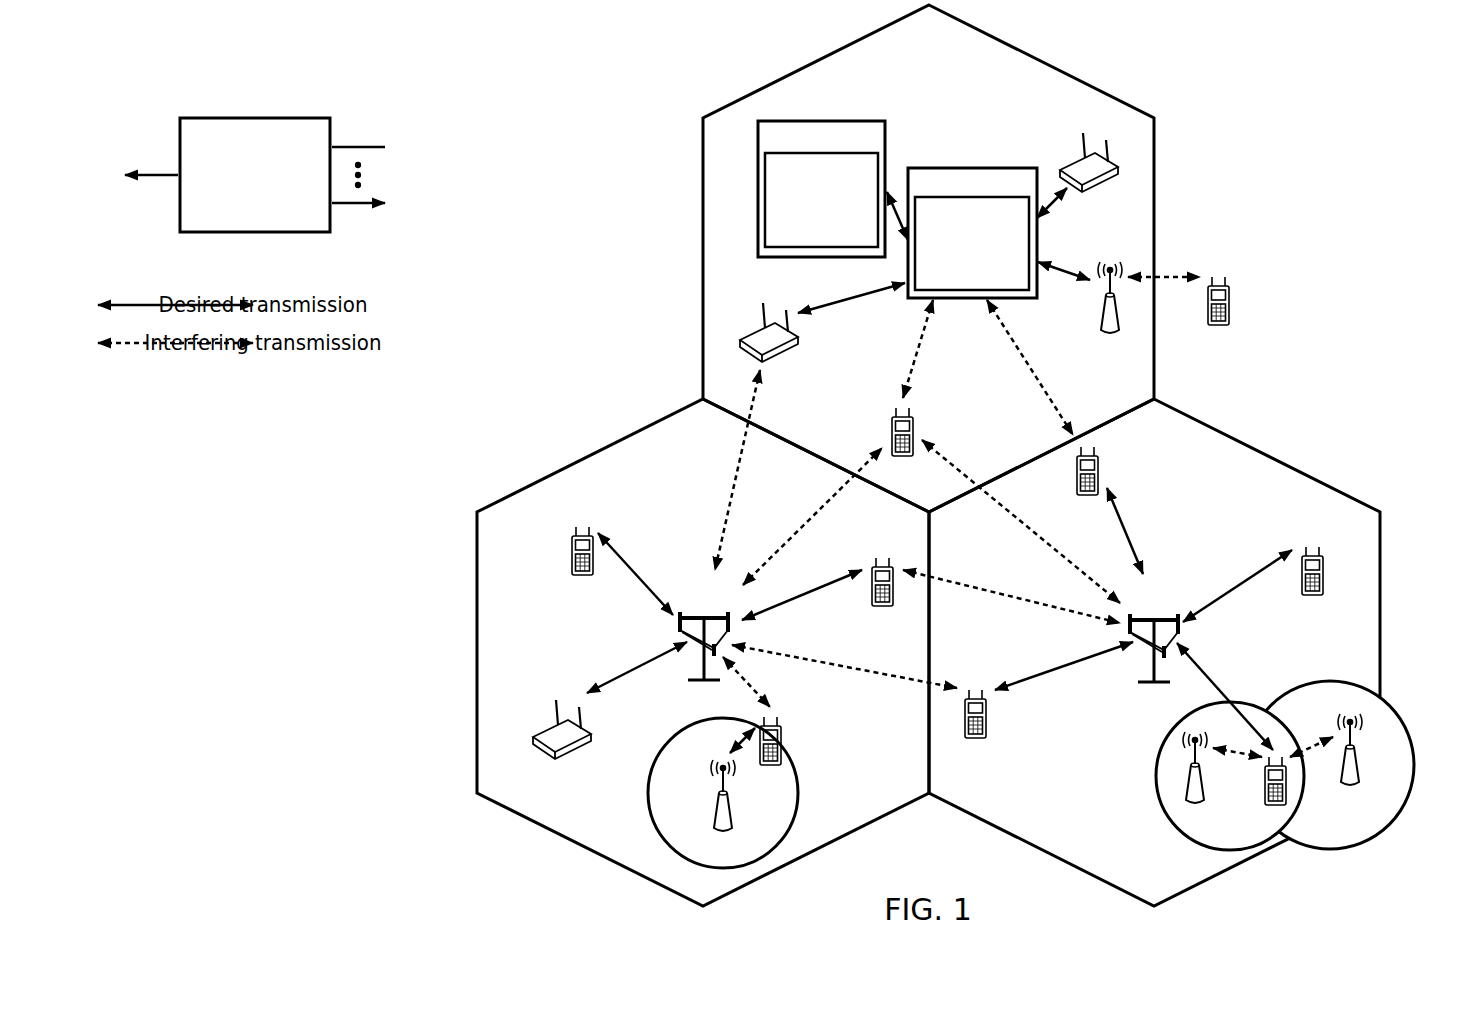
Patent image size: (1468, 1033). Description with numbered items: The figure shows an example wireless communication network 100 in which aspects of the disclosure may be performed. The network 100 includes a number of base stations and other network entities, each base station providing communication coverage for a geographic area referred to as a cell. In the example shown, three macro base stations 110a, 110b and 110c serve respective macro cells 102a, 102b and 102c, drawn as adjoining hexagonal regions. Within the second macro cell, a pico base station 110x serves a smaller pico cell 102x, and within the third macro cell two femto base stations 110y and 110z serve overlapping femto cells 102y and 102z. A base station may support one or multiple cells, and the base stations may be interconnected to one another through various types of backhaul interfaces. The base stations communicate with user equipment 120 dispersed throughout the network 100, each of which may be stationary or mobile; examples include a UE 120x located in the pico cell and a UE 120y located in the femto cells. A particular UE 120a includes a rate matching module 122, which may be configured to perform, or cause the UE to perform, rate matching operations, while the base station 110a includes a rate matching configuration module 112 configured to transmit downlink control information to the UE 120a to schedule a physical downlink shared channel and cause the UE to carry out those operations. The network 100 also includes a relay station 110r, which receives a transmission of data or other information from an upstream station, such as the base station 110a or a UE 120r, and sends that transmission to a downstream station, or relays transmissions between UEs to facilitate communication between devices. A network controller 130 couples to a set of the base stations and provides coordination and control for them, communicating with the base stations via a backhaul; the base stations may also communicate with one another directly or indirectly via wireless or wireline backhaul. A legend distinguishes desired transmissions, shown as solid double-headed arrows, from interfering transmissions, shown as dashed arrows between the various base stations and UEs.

The wireless communication network 100 is at (1305, 74).
The macro cell 102a is at (1048, 64).
The macro cell 102b is at (593, 455).
The macro cell 102c is at (1265, 455).
The pico cell 102x is at (672, 737).
The femto cell 102y is at (1162, 745).
The femto cell 102z is at (1326, 682).
The base station 110a is at (955, 235).
The base station 110b is at (700, 614).
The base station 110c is at (1150, 616).
The relay station 110r is at (1098, 318).
The pico base station 110x is at (734, 818).
The femto base station 110y is at (1205, 790).
The femto base station 110z is at (1360, 776).
The rate matching configuration module 112 is at (927, 297).
The user equipment 120 is at (1096, 152).
The user equipment 120a is at (799, 174).
The user equipment 120r is at (1230, 312).
The user equipment 120x is at (782, 738).
The user equipment 120y is at (1263, 800).
The rate matching module 122 is at (765, 215).
The network controller 130 is at (258, 118).